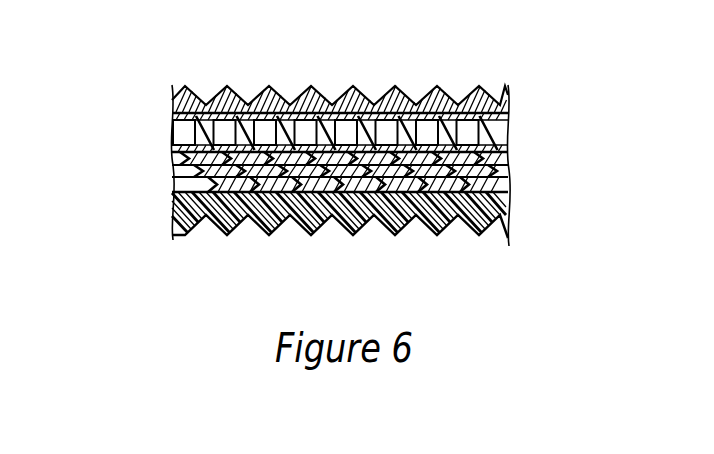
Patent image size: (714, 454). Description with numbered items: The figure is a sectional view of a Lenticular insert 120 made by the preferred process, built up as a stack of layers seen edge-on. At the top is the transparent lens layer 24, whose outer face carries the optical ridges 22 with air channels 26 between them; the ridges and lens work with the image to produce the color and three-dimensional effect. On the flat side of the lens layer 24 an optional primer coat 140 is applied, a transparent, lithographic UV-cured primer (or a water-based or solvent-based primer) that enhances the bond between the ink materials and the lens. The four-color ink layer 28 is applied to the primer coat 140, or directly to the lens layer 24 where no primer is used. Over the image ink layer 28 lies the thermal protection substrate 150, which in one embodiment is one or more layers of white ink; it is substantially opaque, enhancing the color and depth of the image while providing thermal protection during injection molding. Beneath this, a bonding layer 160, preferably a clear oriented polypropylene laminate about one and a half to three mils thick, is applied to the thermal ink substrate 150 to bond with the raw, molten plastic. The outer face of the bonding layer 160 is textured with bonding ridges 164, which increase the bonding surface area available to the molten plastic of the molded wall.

The Lenticular insert 120 is at (125, 76).
The optical ridges 22 is at (460, 100).
The air channels 26 is at (353, 88).
The transparent lens layer 24 is at (510, 118).
The primer coat 140 is at (512, 160).
The thermal protection substrate 150 is at (178, 185).
The ink layer 28 is at (512, 172).
The bonding layer 160 is at (178, 208).
The bonding ridges 164 is at (255, 218).